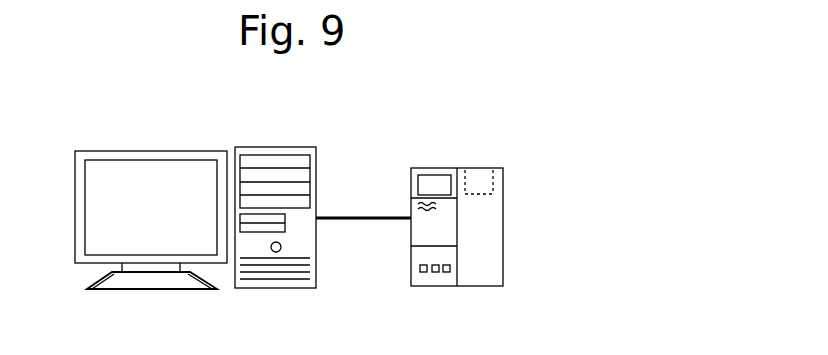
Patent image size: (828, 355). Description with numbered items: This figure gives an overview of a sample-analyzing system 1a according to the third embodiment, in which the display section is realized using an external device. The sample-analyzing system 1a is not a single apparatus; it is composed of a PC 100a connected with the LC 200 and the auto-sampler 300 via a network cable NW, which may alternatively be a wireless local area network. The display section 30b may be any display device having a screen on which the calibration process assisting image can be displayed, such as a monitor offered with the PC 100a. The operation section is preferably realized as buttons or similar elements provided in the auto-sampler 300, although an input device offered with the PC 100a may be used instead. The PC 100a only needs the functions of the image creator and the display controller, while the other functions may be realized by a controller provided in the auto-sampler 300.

The sample-analyzing system 1a is at (103, 112).
The display section 30b is at (171, 222).
The PC 100a is at (278, 147).
The network cable NW is at (362, 221).
The LC 200 is at (465, 168).
The auto-sampler 300 is at (457, 227).